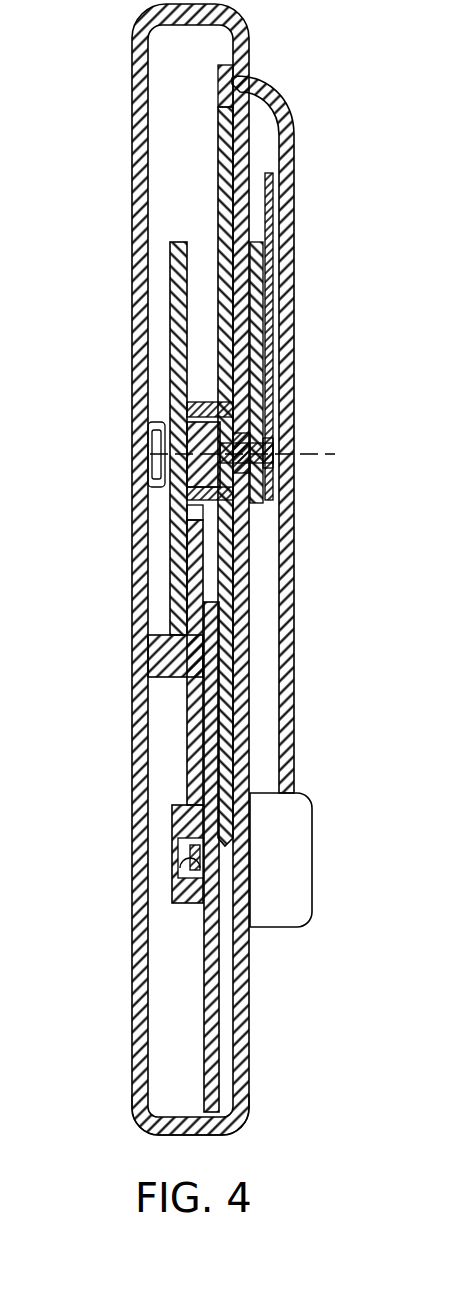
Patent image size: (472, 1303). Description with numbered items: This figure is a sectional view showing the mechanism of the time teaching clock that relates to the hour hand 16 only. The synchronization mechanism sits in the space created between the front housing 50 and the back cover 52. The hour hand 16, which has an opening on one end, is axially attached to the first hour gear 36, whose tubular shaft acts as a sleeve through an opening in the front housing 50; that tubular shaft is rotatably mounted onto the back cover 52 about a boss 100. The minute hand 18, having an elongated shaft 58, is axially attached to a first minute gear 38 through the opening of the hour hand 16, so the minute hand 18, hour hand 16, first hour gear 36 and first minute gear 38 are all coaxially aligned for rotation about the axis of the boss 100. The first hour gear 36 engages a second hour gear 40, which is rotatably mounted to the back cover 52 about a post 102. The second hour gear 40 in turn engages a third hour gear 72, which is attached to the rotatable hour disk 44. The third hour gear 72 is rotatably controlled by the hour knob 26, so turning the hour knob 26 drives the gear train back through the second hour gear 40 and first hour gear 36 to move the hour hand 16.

The hour hand 16 is at (256, 290).
The minute hand 18 is at (268, 212).
The hour knob 26 is at (300, 852).
The first hour gear 36 is at (200, 405).
The first minute gear 38 is at (170, 277).
The second hour gear 40 is at (192, 580).
The hour disk 44 is at (216, 1068).
The front housing 50 is at (242, 1110).
The back cover 52 is at (143, 1113).
The elongated shaft 58 is at (152, 466).
The third hour gear 72 is at (178, 880).
The boss 100 is at (150, 424).
The post 102 is at (150, 656).